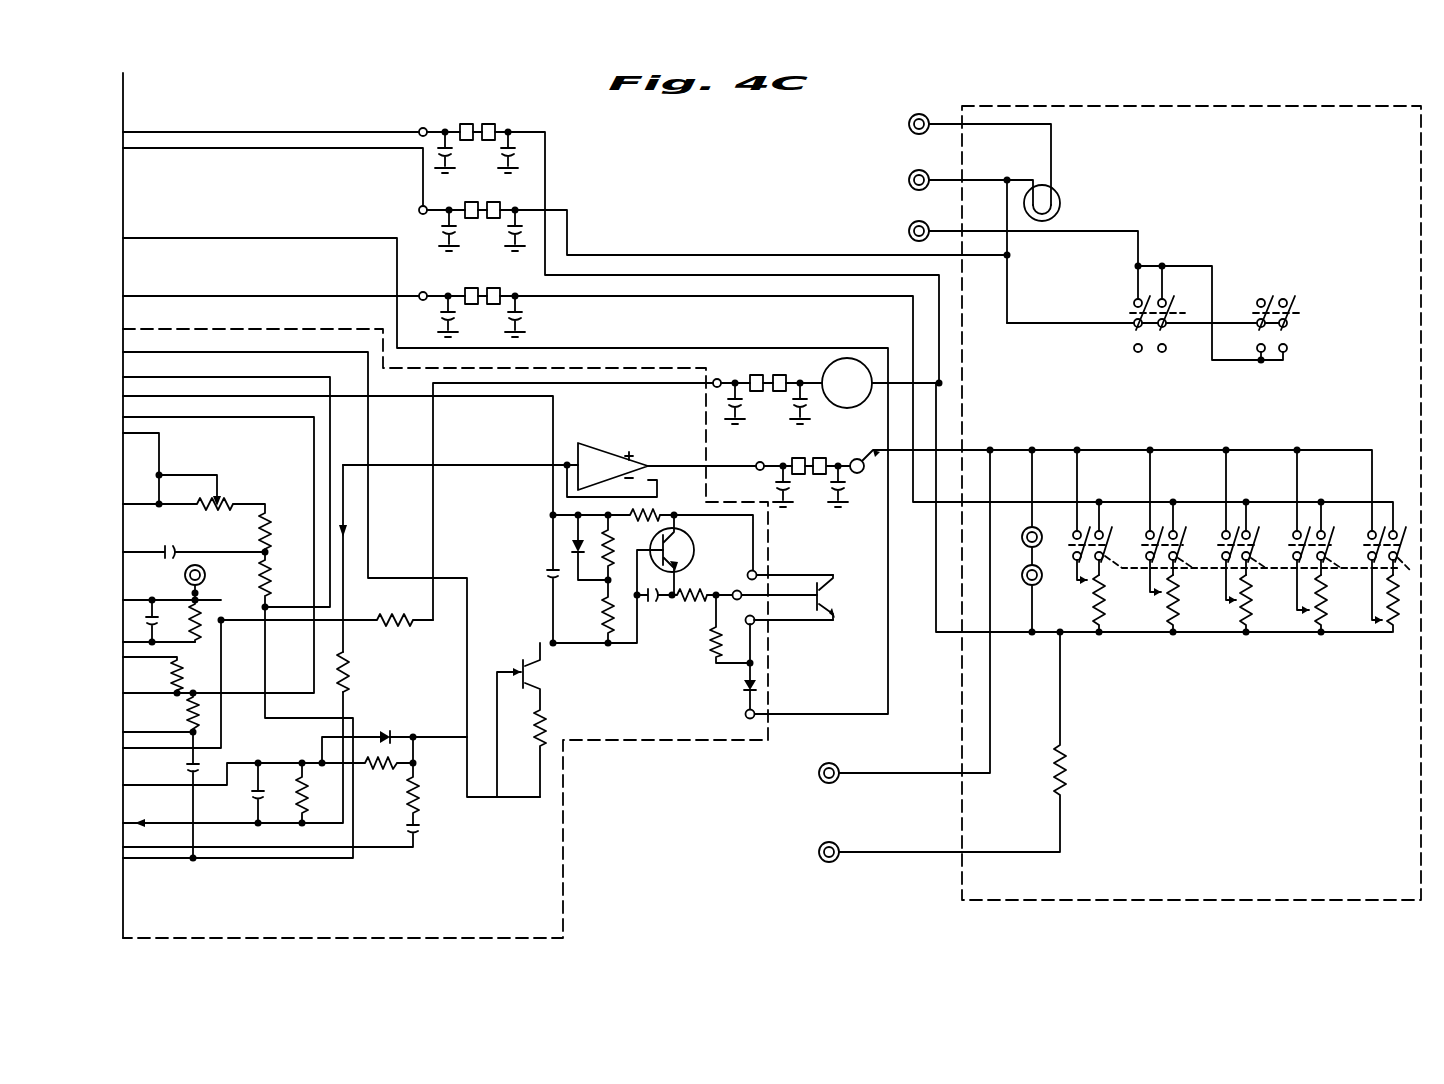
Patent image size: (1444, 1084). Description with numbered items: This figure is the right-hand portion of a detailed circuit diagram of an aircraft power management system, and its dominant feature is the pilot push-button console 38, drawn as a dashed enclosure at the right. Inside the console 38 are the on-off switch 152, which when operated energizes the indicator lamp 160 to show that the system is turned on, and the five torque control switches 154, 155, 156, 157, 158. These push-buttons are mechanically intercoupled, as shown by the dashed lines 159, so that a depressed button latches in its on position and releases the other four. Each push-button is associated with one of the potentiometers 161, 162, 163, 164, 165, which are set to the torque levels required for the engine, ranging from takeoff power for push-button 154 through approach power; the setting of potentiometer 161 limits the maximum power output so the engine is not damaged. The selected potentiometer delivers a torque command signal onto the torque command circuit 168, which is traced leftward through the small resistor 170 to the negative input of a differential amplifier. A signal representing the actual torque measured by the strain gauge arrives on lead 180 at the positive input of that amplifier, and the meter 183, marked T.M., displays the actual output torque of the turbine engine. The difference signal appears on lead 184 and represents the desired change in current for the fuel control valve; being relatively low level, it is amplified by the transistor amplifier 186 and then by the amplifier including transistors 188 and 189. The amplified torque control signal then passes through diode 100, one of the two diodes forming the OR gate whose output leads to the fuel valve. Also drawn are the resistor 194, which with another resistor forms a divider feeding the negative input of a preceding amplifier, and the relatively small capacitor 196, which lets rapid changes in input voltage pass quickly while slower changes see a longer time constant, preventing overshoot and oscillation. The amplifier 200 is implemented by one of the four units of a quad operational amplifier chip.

The pilot pushbutton console 38 is at (1277, 107).
The diode 100 is at (760, 687).
The on-off switch 152 is at (1173, 330).
The torque control switch 154 is at (1110, 534).
The torque control switch 155 is at (1183, 534).
The torque control switch 156 is at (1255, 534).
The torque control switch 157 is at (1331, 534).
The torque control switch 158 is at (1381, 530).
The dashed lines 159 is at (1128, 572).
The indicator lamp 160 is at (1061, 198).
The potentiometer 161 is at (1090, 600).
The potentiometer 162 is at (1178, 605).
The potentiometer 163 is at (1252, 605).
The potentiometer 164 is at (1330, 605).
The potentiometer 165 is at (1400, 625).
The torque command circuit 168 is at (345, 635).
The small resistor 170 is at (350, 672).
The lead 180 is at (222, 710).
The meter 183 is at (851, 358).
The lead 184 is at (283, 766).
The transistor amplifier 186 is at (535, 672).
The transistor 188 is at (718, 548).
The transistor 189 is at (830, 597).
The resistor 194 is at (192, 625).
The capacitor 196 is at (148, 625).
The amplifier 200 is at (608, 450).